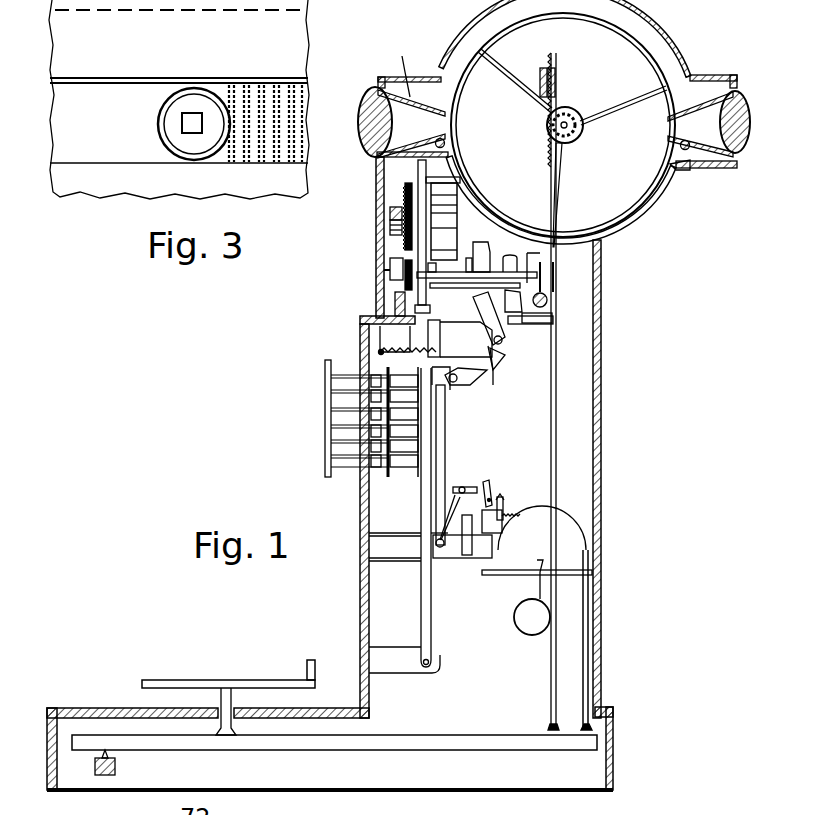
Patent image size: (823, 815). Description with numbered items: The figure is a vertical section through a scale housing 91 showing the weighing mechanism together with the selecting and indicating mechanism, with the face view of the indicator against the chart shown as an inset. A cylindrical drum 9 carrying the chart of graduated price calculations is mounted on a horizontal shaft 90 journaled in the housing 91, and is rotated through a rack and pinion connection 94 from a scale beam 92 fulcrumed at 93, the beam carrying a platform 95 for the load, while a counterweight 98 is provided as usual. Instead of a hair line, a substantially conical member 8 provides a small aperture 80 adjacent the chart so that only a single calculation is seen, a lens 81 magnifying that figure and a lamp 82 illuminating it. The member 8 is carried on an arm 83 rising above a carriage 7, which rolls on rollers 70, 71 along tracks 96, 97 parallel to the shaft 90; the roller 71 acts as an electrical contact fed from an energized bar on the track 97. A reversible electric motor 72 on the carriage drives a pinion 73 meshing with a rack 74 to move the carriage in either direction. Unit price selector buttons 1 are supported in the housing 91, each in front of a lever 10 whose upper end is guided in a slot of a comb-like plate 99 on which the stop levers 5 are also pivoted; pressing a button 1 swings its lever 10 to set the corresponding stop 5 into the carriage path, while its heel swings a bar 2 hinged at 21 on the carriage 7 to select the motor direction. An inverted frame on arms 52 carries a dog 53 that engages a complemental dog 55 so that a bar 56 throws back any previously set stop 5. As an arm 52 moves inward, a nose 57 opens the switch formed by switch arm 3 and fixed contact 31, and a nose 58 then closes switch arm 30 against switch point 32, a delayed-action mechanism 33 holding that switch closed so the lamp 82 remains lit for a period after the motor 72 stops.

In FIG. 1, the unit price selector button 1 is at (325, 406).
In FIG. 1, the bar 2 is at (429, 318).
In FIG. 1, the switch arm 3 is at (472, 488).
In FIG. 1, the stop lever 5 is at (478, 303).
In FIG. 1, the carriage 7 is at (541, 285).
In FIG. 3, the price indicator member 8 is at (217, 162).
In FIG. 1, the price indicator member 8 is at (401, 66).
In FIG. 3, the cylindrical drum 9 is at (113, 97).
In FIG. 1, the cylindrical drum 9 is at (513, 28).
In FIG. 1, the lever 10 is at (431, 619).
In FIG. 1, the hinge 21 is at (449, 171).
In FIG. 1, the switch arm 30 is at (489, 483).
In FIG. 1, the fixed contact point 31 is at (449, 557).
In FIG. 1, the switch point 32 is at (504, 502).
In FIG. 1, the delayed-action mechanism 33 is at (498, 517).
In FIG. 1, the arm 52 is at (445, 418).
In FIG. 1, the dog 53 is at (484, 372).
In FIG. 1, the complemental dog 55 is at (500, 356).
In FIG. 1, the bar 56 is at (491, 355).
In FIG. 1, the nose 57 is at (458, 493).
In FIG. 1, the nose 58 is at (437, 546).
In FIG. 1, the roller 70 is at (560, 262).
In FIG. 1, the roller 71 is at (390, 268).
In FIG. 1, the electric motor 72 is at (448, 188).
In FIG. 1, the pinion 73 is at (390, 230).
In FIG. 1, the rack 74 is at (390, 211).
In FIG. 3, the aperture 80 is at (167, 146).
In FIG. 1, the aperture 80 is at (450, 114).
In FIG. 1, the lens 81 is at (361, 104).
In FIG. 1, the lamp 82 is at (443, 141).
In FIG. 1, the arm 83 is at (418, 181).
In FIG. 1, the horizontal shaft 90 is at (583, 130).
In FIG. 3, the scale housing 91 is at (179, 55).
In FIG. 1, the scale housing 91 is at (601, 293).
In FIG. 1, the scale beam 92 is at (521, 738).
In FIG. 1, the fulcrum 93 is at (113, 755).
In FIG. 1, the rack and pinion connection 94 is at (560, 108).
In FIG. 1, the platform 95 is at (214, 678).
In FIG. 1, the track 96 is at (545, 305).
In FIG. 1, the track 97 is at (395, 302).
In FIG. 1, the counterweight 98 is at (527, 618).
In FIG. 1, the plate 99 is at (531, 322).